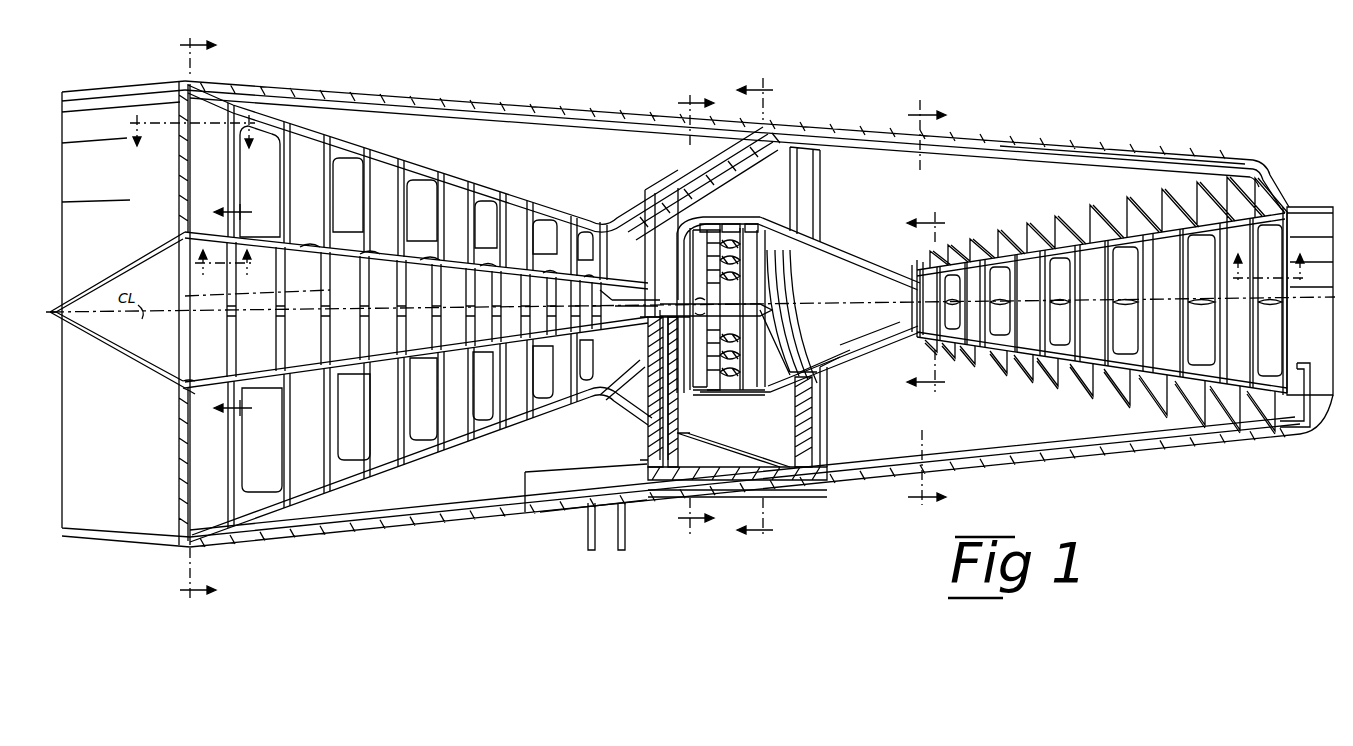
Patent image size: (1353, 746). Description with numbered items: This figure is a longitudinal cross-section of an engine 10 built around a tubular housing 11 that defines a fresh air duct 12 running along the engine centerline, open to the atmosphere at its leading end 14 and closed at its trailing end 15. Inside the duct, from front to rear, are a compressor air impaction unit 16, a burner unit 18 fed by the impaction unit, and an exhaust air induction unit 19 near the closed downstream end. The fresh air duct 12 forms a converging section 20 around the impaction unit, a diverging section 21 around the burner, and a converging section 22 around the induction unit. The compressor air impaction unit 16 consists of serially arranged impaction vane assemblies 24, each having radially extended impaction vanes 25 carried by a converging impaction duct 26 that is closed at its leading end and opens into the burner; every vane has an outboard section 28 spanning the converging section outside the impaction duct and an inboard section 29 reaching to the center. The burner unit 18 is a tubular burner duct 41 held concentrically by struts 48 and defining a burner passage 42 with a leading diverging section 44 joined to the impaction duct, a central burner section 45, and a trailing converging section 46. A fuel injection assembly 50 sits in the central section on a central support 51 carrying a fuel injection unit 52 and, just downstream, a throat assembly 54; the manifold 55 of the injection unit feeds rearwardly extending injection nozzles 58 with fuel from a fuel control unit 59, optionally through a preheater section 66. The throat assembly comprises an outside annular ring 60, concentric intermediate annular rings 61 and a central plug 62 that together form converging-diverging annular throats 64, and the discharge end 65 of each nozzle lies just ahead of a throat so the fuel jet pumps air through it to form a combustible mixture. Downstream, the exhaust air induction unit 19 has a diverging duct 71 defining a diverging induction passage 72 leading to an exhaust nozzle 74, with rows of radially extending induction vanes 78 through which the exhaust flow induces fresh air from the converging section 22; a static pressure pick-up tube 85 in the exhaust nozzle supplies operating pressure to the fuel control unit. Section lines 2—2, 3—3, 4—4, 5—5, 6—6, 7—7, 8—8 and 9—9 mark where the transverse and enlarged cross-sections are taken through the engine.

The engine 10 is at (500, 88).
The tubular housing 11 is at (456, 94).
The fresh air duct 12 is at (143, 98).
The leading end 14 is at (63, 530).
The trailing end 15 is at (1266, 178).
The compressor air impaction unit 16 is at (498, 178).
The burner unit 18 is at (808, 231).
The exhaust air induction unit 19 is at (1112, 233).
The converging section 20 is at (546, 176).
The diverging section 21 is at (682, 174).
The converging section 22 is at (1075, 154).
The impaction vane assembly 24 is at (242, 84).
The impaction vane 25 is at (200, 144).
The converging impaction duct 26 is at (184, 400).
The outboard section 28 is at (196, 170).
The inboard section 29 is at (220, 332).
The tubular burner duct 41 is at (834, 372).
The burner passage 42 is at (836, 269).
The leading diverging section 44 is at (632, 350).
The central burner section 45 is at (754, 390).
The trailing converging section 46 is at (858, 361).
The struts 48 is at (646, 238).
The fuel injection assembly 50 is at (711, 223).
The central support 51 is at (640, 298).
The fuel injection unit 52 is at (690, 264).
The throat assembly 54 is at (736, 223).
The manifold 55 is at (700, 392).
The injection nozzles 58 is at (730, 390).
The fuel control unit 59 is at (595, 472).
The annular ring 60 is at (728, 220).
The intermediate annular rings 61 is at (744, 262).
The central plug 62 is at (744, 278).
The converging-diverging annular throats 64 is at (745, 242).
The discharge end 65 is at (744, 358).
The preheater section 66 is at (806, 325).
The diverging duct 71 is at (1046, 376).
The diverging induction passage 72 is at (991, 360).
The exhaust nozzle 74 is at (1303, 210).
The induction vanes 78 is at (1020, 254).
The static pressure pick-up tube 85 is at (1312, 365).
The section line 2— 2 is at (206, 324).
The section line 3— 3 is at (226, 316).
The section line 4— 4 is at (696, 319).
The section line 5— 5 is at (755, 311).
The section line 6— 6 is at (934, 306).
The section line 7— 7 is at (920, 301).
The section line 8— 8 is at (188, 139).
The section line 9— 9 is at (224, 262).